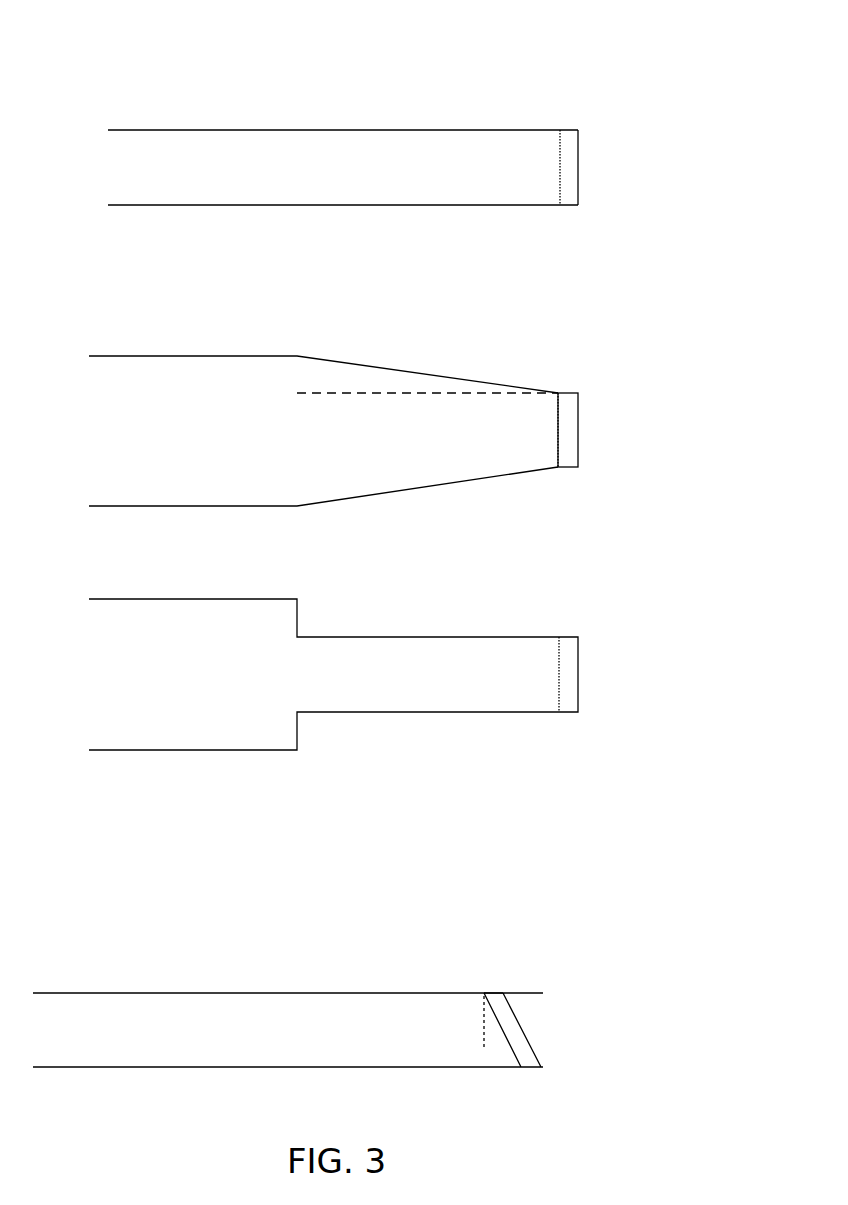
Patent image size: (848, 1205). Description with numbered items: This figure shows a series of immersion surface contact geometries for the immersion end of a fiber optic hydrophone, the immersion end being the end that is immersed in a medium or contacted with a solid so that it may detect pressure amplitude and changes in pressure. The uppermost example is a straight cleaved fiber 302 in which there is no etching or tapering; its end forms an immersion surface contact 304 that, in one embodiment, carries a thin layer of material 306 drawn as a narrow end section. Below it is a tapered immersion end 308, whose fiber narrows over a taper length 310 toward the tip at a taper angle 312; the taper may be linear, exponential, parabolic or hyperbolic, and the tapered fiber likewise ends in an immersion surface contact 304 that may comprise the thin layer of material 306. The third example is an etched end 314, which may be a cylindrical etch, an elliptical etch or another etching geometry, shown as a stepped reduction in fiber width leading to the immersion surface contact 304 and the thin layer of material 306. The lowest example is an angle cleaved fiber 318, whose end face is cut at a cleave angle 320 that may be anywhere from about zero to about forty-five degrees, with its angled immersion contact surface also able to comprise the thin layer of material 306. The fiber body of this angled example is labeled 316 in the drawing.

The straight cleaved fiber 302 is at (343, 167).
The immersion surface contact 304 is at (548, 122).
The thin layer of material 306 is at (592, 164).
The tapered immersion end 308 is at (323, 431).
The taper length 310 is at (544, 337).
The taper angle 312 is at (570, 386).
The etched end 314 is at (324, 674).
The waveguide with angled end face 316 is at (276, 1030).
The angle cleaved fiber 318 is at (473, 985).
The cleave angle 320 is at (476, 1025).